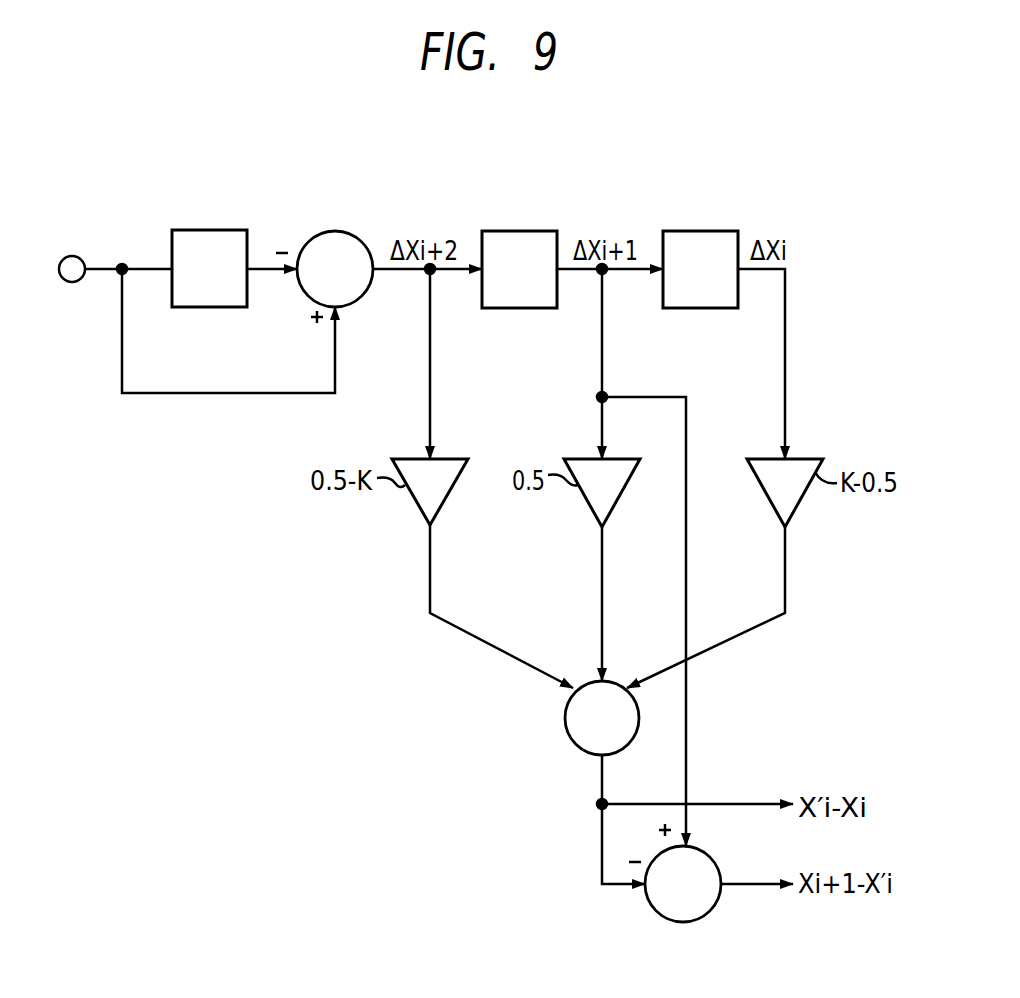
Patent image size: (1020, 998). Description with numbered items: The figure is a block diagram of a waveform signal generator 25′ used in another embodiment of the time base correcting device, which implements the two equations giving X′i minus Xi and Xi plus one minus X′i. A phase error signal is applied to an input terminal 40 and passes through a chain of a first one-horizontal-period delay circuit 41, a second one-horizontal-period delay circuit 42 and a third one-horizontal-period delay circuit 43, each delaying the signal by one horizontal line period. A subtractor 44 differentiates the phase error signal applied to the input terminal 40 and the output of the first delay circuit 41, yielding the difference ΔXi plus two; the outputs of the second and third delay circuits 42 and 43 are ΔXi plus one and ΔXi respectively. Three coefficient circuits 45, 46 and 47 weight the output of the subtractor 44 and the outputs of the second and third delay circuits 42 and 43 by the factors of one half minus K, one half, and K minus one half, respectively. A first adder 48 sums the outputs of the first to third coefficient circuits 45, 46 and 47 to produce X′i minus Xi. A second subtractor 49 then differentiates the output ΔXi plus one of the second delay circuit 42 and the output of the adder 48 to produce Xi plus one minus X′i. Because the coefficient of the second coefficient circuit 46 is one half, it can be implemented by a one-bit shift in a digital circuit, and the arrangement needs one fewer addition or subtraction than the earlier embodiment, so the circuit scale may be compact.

The waveform signal generator 25′ is at (755, 207).
The input terminal 40 is at (77, 255).
The first 1H delay circuit 41 is at (237, 230).
The second 1H delay circuit 42 is at (533, 231).
The third 1H delay circuit 43 is at (708, 231).
The subtractor 44 is at (345, 230).
The first coefficient circuit 45 is at (417, 505).
The second coefficient circuit 46 is at (593, 512).
The third coefficient circuit 47 is at (777, 513).
The first adder 48 is at (565, 712).
The second subtractor 49 is at (655, 912).